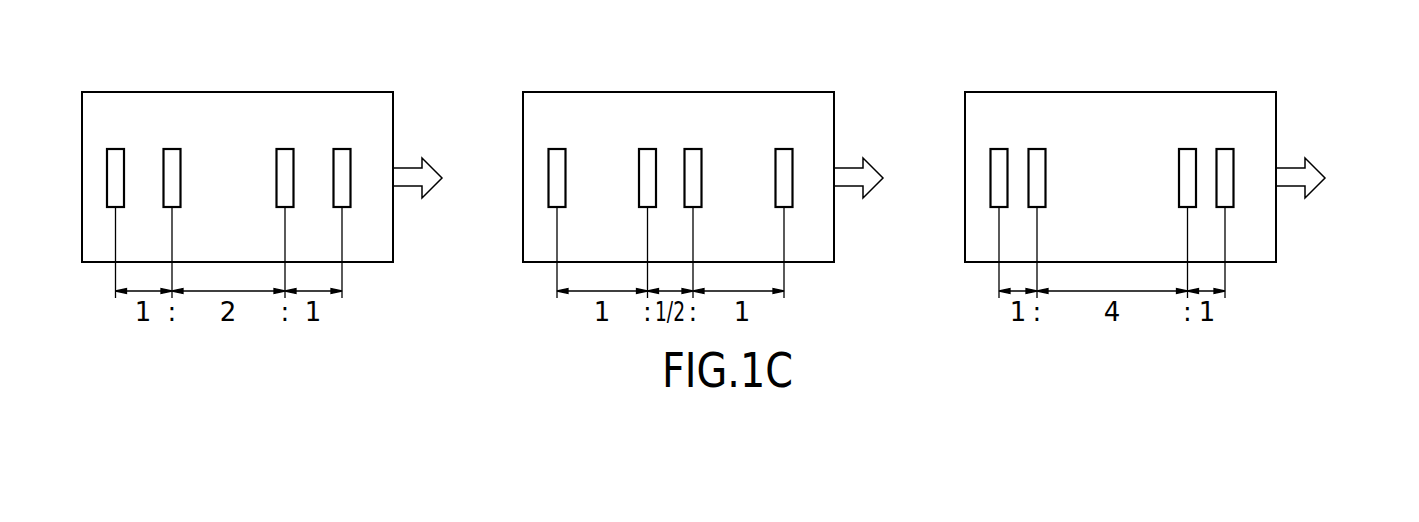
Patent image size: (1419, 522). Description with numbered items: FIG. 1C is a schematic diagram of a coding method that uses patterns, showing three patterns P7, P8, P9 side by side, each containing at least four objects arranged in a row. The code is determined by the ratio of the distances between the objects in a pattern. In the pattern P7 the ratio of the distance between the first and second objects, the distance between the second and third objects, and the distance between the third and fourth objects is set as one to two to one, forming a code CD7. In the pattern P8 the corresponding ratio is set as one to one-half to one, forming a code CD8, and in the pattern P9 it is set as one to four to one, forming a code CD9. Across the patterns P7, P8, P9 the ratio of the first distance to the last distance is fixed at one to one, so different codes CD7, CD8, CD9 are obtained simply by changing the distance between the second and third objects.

The pattern P7 is at (238, 160).
The pattern P8 is at (679, 160).
The pattern P9 is at (1121, 160).
The code CD7 is at (444, 178).
The code CD8 is at (885, 178).
The code CD9 is at (1327, 178).